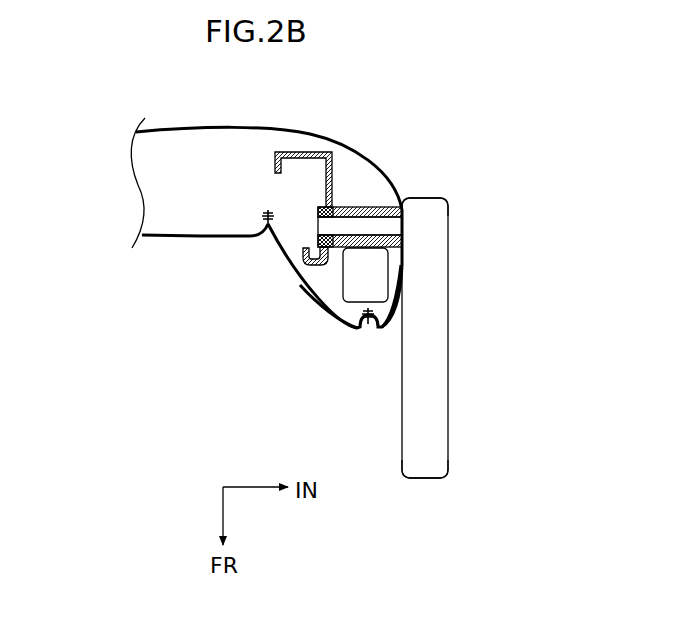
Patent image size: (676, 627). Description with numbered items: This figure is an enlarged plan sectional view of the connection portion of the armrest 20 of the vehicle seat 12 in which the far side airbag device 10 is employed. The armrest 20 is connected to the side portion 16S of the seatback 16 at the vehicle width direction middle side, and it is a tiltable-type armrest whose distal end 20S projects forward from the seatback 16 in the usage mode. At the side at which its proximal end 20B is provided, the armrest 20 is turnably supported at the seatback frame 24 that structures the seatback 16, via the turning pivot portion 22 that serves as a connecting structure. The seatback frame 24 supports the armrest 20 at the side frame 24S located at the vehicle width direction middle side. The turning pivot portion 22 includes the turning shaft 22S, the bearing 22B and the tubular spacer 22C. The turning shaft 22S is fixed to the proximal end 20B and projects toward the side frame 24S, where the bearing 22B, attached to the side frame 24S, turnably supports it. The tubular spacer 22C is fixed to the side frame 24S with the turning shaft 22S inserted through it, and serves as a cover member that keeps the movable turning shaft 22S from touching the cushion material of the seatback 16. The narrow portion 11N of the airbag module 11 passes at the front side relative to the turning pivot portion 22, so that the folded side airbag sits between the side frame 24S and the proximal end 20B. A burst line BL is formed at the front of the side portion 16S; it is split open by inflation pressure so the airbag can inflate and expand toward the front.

The far side airbag device 10 is at (383, 318).
The airbag module 11 is at (279, 340).
The narrow portion 11N is at (343, 252).
The vehicle seat 12 is at (147, 257).
The seatback 16 is at (179, 146).
The side portion 16S is at (320, 353).
The armrest 20 is at (432, 323).
The proximal end 20B is at (428, 203).
The distal end 20S is at (420, 479).
The turning pivot portion 22 is at (282, 294).
The bearing 22B is at (316, 210).
The turning shaft 22S is at (318, 226).
The tubular spacer 22C is at (345, 293).
The seatback frame 24 is at (342, 137).
The side frame 24S is at (305, 152).
The burst line BL is at (368, 330).